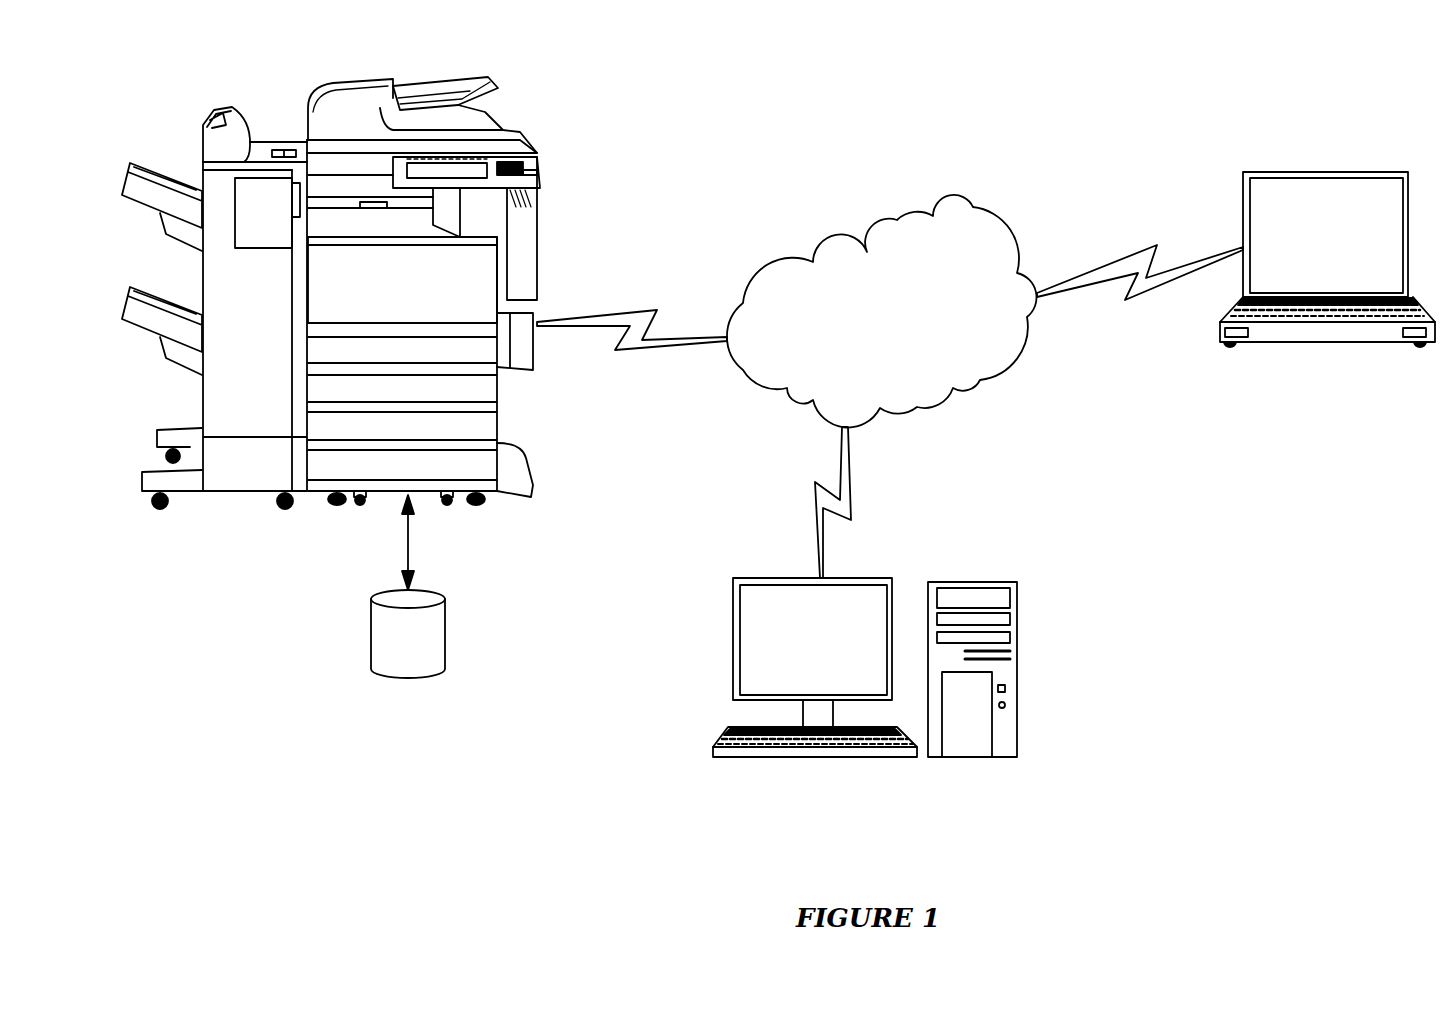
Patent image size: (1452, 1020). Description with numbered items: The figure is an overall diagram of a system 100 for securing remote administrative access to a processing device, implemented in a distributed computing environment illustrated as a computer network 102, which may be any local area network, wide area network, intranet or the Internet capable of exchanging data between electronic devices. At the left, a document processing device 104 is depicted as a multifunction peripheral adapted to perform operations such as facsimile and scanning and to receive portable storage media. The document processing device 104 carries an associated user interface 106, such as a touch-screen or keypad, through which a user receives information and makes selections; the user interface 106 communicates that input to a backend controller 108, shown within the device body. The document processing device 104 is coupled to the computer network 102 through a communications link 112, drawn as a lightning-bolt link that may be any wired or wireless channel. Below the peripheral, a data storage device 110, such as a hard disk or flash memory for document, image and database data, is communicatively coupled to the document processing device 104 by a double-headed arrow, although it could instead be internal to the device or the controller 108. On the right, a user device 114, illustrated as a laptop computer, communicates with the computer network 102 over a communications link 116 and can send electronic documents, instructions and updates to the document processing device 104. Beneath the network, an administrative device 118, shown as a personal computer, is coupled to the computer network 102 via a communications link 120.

The system 100 is at (1092, 83).
The computer network 102 is at (955, 196).
The document processing device 104 is at (343, 83).
The user interface 106 is at (568, 160).
The controller 108 is at (500, 268).
The data storage device 110 is at (442, 596).
The communications link 112 is at (652, 311).
The user device 114 is at (1320, 172).
The communications link 116 is at (1157, 248).
The administrative device 118 is at (963, 581).
The communications link 120 is at (815, 490).